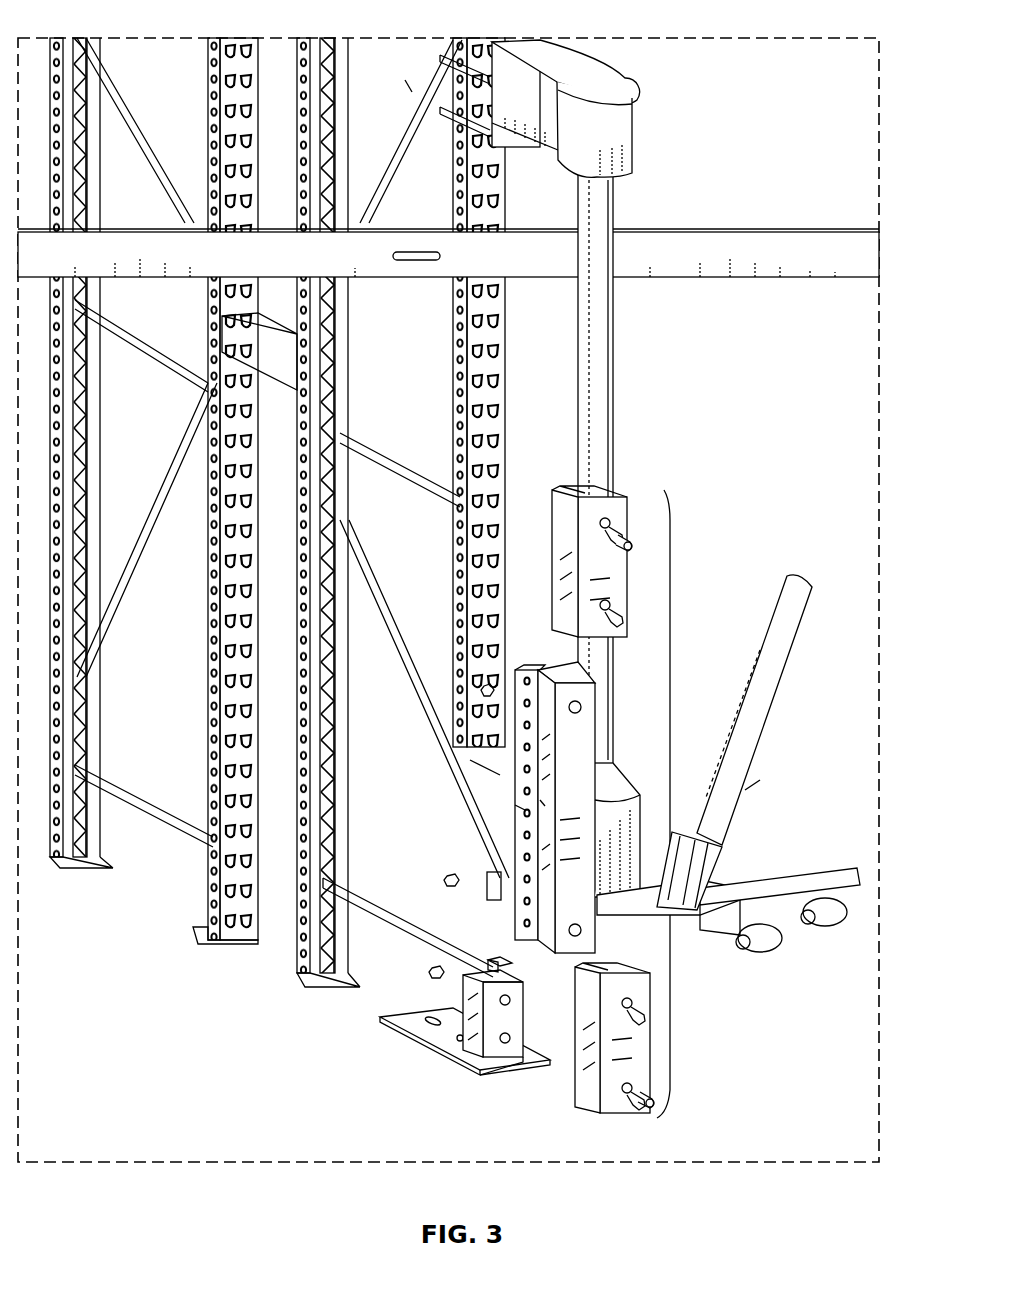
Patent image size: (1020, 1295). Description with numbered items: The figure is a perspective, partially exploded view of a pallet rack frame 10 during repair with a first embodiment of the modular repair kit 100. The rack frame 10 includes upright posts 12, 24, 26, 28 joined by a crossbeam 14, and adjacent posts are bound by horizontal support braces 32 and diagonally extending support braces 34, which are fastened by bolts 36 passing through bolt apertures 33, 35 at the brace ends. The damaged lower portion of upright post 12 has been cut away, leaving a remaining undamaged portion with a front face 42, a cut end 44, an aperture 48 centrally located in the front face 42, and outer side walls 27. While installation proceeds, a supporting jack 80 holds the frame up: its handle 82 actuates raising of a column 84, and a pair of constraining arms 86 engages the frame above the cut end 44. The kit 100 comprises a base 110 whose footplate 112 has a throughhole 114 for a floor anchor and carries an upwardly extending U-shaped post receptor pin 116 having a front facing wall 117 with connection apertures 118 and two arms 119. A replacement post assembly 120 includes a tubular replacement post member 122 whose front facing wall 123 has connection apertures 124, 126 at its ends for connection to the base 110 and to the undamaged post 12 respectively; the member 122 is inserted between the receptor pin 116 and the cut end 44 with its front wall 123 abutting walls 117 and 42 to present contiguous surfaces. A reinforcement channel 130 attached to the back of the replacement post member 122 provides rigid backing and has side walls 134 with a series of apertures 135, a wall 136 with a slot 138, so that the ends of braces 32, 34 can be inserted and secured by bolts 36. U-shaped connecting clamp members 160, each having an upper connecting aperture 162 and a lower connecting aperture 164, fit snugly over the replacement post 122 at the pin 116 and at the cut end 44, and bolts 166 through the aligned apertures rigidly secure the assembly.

The rack frame 10 is at (412, 92).
The upright post 12 is at (308, 512).
The crossbeam 14 is at (848, 270).
The upright post 24 is at (100, 415).
The upright post 26 is at (208, 645).
The outer side wall 27 is at (302, 840).
The upright post 28 is at (361, 512).
The horizontal support brace 32 is at (360, 892).
The bolt aperture 33 is at (488, 962).
The diagonal support brace 34 is at (365, 590).
The bolt aperture 35 is at (487, 880).
The bolt 36 is at (447, 880).
The front face 42 is at (497, 362).
The cut end 44 is at (500, 775).
The aperture 48 is at (482, 690).
The supporting jack 80 is at (608, 842).
The handle 82 is at (795, 640).
The column 84 is at (612, 205).
The constraining arm 86 is at (470, 140).
The modular repair kit 100 is at (740, 780).
The base 110 is at (443, 1018).
The footplate 112 is at (410, 1026).
The throughhole 114 is at (428, 1018).
The post receptor pin 116 is at (471, 1018).
The front facing wall 117 is at (525, 1060).
The connection aperture 118 is at (500, 1005).
The arm 119 is at (497, 960).
The replacement post assembly 120 is at (600, 715).
The replacement post member 122 is at (640, 862).
The front facing wall 123 is at (650, 800).
The connection aperture 124 is at (582, 933).
The connection aperture 126 is at (636, 790).
The reinforcement channel 130 is at (520, 808).
The side wall 134 is at (545, 805).
The aperture 135 is at (540, 960).
The wall 136 is at (522, 672).
The slot 138 is at (575, 700).
The connecting clamp member 160 is at (627, 836).
The upper connecting aperture 162 is at (610, 523).
The lower connecting aperture 164 is at (612, 605).
The bolt 166 is at (632, 546).